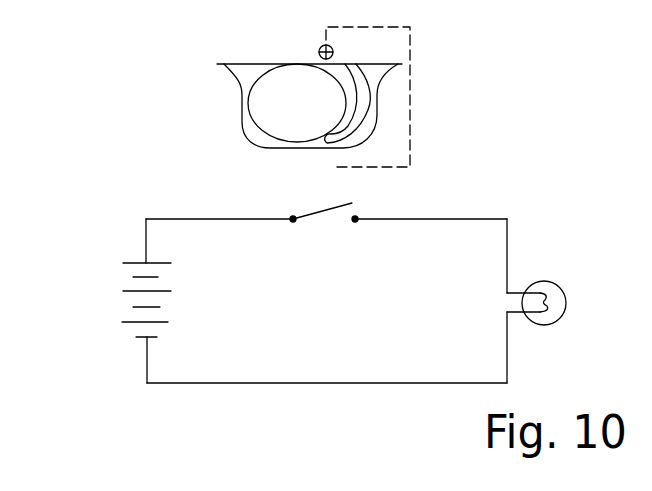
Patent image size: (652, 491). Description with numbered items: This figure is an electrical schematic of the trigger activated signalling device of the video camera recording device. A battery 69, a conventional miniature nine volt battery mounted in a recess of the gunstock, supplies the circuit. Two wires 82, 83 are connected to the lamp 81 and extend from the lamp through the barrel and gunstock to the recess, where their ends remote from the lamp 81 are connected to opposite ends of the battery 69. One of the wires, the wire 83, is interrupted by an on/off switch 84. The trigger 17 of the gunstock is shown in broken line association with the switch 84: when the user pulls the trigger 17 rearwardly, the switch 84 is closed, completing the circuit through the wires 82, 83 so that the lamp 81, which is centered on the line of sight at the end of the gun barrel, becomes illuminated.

The trigger mechanism 17 is at (343, 98).
The battery 69 is at (121, 278).
The lamp 81 is at (555, 283).
The wire 82 is at (405, 383).
The wire 83 is at (245, 219).
The on/off switch 84 is at (337, 207).